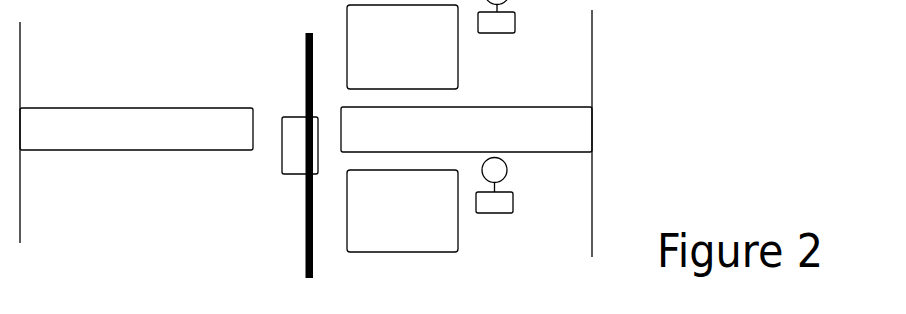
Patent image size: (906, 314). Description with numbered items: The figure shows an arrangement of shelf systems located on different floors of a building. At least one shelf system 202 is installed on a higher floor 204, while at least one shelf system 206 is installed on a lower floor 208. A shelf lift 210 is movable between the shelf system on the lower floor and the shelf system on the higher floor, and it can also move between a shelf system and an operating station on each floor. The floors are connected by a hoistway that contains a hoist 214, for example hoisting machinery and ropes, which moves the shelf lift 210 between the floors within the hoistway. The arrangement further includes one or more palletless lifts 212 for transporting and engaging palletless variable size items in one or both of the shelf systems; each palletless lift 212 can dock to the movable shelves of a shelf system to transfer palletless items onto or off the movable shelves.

The shelf system 202 is at (402, 47).
The higher floor 204 is at (120, 132).
The shelf system 206 is at (402, 211).
The lower floor 208 is at (136, 162).
The shelf lift 210 is at (293, 175).
The palletless lift 212 is at (492, 33).
The hoist 214 is at (305, 78).